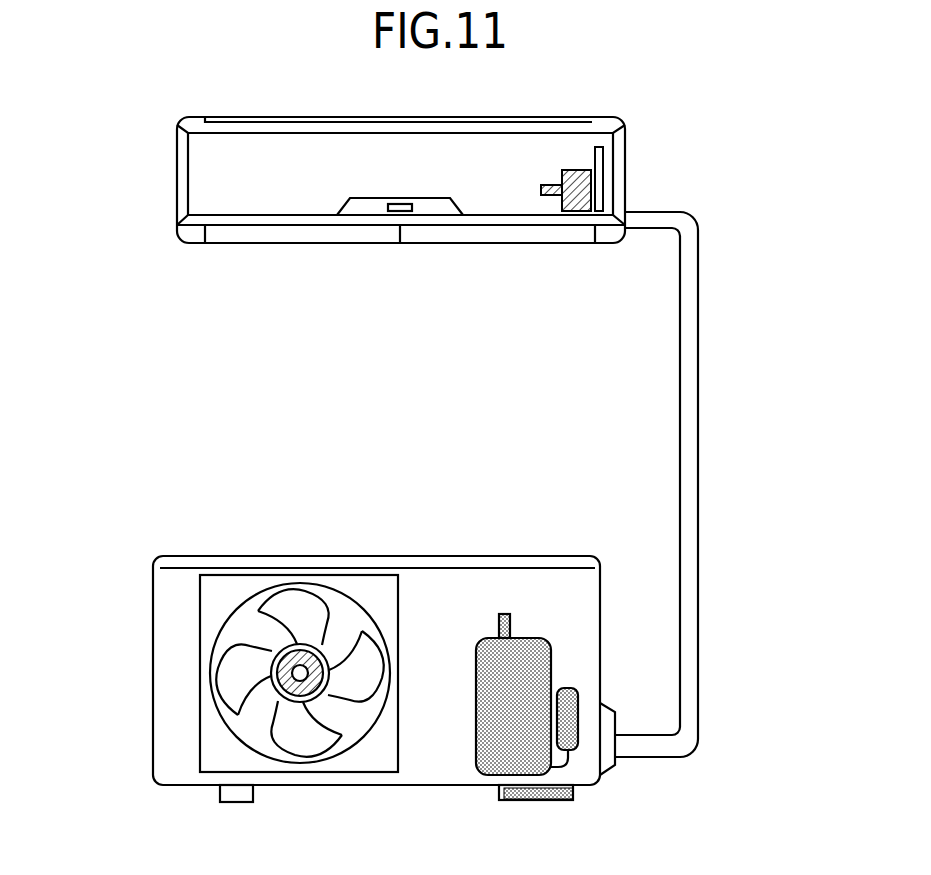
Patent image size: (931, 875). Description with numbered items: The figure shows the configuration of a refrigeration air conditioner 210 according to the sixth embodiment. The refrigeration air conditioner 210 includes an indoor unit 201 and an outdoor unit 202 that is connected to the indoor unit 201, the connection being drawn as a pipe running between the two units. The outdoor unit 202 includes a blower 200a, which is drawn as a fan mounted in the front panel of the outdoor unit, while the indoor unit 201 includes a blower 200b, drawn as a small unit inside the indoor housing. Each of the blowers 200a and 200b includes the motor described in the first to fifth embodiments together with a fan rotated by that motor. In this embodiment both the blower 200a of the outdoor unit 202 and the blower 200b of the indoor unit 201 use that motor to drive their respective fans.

The indoor unit 201 is at (177, 181).
The outdoor unit 202 is at (298, 557).
The blower 200a is at (300, 673).
The blower 200b is at (578, 212).
The refrigeration air conditioner 210 is at (755, 192).